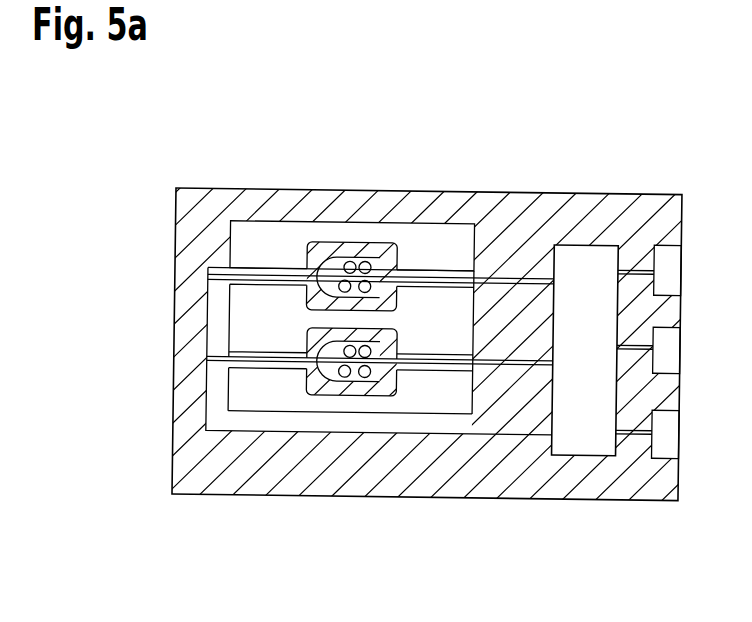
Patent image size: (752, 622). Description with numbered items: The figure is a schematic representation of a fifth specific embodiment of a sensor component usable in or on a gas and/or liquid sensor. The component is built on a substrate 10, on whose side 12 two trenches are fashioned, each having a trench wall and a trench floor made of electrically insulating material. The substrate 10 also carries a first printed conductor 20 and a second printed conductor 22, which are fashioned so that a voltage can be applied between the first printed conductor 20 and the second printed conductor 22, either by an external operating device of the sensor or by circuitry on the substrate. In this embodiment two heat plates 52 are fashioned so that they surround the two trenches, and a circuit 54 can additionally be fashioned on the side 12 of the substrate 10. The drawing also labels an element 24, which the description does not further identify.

The substrate 10 is at (638, 227).
The side of substrate 12 is at (204, 219).
The first printed conductor 20 is at (252, 432).
The second printed conductor 22 is at (526, 356).
The seal body 24 is at (373, 383).
The heat plates 52 is at (434, 310).
The circuit 54 is at (590, 427).